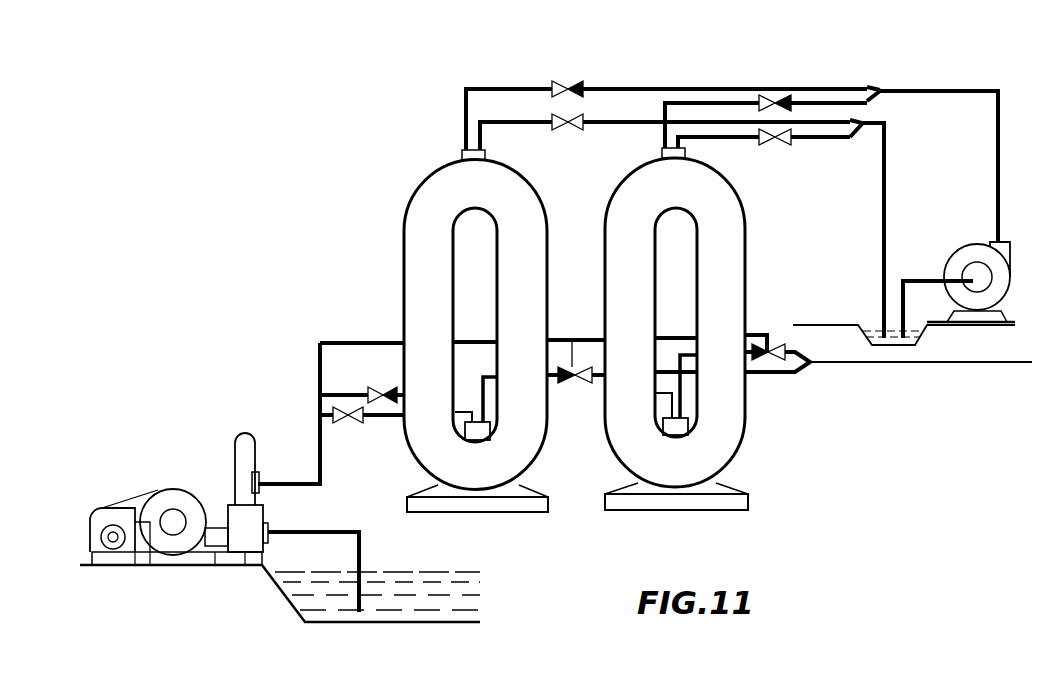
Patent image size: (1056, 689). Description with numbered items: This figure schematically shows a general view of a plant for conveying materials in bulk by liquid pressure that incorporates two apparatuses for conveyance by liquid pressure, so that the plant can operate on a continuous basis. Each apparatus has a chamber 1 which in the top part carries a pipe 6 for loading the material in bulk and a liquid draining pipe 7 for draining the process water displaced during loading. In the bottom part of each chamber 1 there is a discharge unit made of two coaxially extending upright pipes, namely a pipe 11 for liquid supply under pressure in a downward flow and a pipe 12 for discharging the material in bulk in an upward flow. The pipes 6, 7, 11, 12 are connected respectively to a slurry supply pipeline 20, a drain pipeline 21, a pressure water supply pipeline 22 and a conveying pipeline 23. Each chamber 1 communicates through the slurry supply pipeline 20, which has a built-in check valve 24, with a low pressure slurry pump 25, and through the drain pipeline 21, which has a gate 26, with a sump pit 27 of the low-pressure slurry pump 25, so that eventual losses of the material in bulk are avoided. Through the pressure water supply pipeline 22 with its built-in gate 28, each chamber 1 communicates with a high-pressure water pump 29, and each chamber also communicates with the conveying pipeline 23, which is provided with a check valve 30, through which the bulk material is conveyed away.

The chamber 1 is at (405, 275).
The pipe for loading the material in bulk 6 is at (465, 140).
The liquid draining pipe 7 is at (482, 137).
The pipe for liquid supply under pressure in a downward flow 11 is at (466, 426).
The pipe for discharging the material in bulk in an upward flow 12 is at (485, 401).
The slurry supply pipeline 20 is at (940, 88).
The drain pipeline 21 is at (885, 190).
The pressure water supply pipeline 22 is at (339, 393).
The conveying pipeline 23 is at (860, 366).
The check valve 24 is at (581, 86).
The low pressure slurry pump 25 is at (1012, 266).
The gate 26 is at (574, 129).
The sump pit 27 is at (896, 345).
The gate 28 is at (377, 390).
The high-pressure water pump 29 is at (256, 450).
The check valve 30 is at (570, 385).